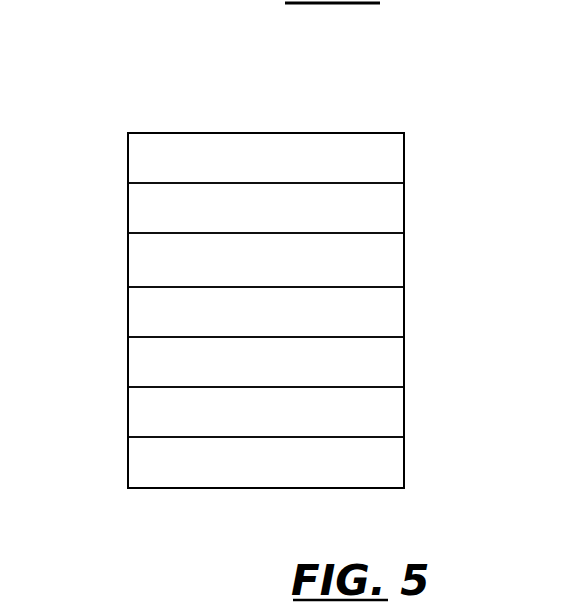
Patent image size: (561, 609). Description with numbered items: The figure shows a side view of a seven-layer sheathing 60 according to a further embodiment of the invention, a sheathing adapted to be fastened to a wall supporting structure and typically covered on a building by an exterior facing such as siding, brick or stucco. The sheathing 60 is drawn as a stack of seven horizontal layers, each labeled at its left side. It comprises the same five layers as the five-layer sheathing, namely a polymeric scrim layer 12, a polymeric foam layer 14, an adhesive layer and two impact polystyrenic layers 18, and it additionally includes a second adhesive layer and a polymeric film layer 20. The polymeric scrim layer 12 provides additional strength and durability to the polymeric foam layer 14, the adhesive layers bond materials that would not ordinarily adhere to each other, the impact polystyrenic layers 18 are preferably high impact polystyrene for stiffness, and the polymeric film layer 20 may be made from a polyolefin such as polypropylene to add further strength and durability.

The sheathing 60 is at (153, 71).
The polymeric scrim layer 12 is at (128, 150).
The impact polystyrenic layer 18 is at (128, 252).
The polymeric foam layer 14 is at (128, 302).
The polymeric film layer 20 is at (128, 457).